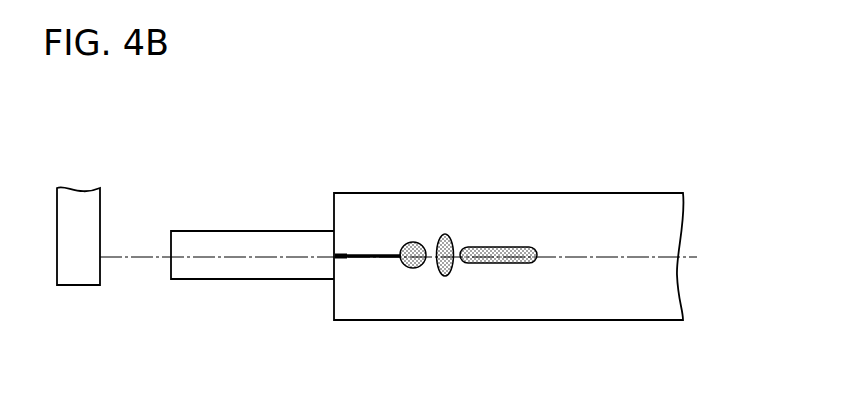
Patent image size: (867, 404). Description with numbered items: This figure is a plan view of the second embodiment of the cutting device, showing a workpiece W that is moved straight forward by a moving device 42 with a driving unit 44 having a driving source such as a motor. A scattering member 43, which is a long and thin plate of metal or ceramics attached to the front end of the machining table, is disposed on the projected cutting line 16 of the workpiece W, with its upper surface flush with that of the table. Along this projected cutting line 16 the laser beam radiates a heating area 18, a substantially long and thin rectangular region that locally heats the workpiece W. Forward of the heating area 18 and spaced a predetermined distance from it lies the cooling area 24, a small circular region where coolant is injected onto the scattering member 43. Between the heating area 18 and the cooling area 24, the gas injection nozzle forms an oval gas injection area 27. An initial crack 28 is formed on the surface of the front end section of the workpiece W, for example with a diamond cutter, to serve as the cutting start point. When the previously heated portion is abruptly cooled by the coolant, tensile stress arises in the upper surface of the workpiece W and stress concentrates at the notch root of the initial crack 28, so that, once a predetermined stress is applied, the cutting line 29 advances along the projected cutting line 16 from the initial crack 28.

The projected cutting line 16 is at (659, 253).
The heating area 18 is at (508, 247).
The cooling area 24 is at (410, 242).
The gas injection area 27 is at (445, 235).
The initial crack 28 is at (343, 260).
The cutting line 29 is at (380, 258).
The moving device 42 is at (67, 303).
The scattering member 43 is at (242, 240).
The driving unit 44 is at (90, 278).
The workpiece W is at (647, 305).